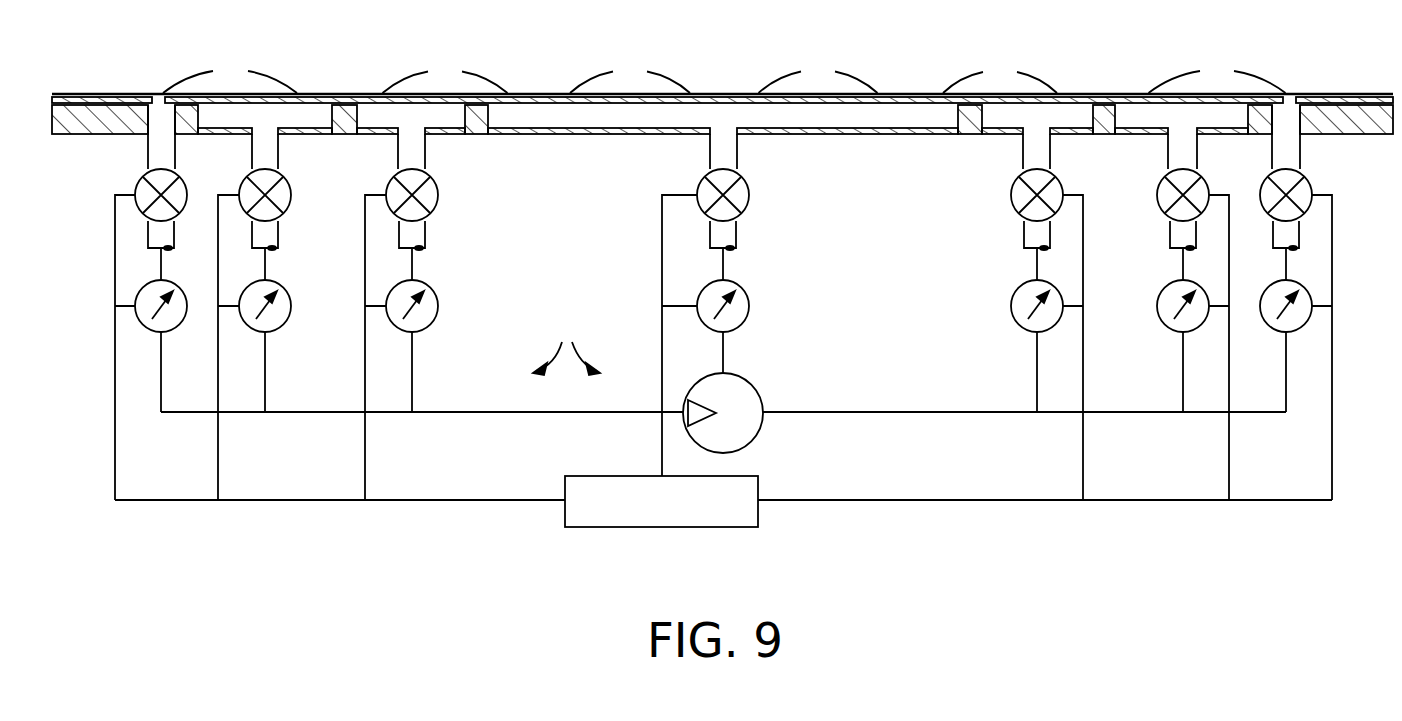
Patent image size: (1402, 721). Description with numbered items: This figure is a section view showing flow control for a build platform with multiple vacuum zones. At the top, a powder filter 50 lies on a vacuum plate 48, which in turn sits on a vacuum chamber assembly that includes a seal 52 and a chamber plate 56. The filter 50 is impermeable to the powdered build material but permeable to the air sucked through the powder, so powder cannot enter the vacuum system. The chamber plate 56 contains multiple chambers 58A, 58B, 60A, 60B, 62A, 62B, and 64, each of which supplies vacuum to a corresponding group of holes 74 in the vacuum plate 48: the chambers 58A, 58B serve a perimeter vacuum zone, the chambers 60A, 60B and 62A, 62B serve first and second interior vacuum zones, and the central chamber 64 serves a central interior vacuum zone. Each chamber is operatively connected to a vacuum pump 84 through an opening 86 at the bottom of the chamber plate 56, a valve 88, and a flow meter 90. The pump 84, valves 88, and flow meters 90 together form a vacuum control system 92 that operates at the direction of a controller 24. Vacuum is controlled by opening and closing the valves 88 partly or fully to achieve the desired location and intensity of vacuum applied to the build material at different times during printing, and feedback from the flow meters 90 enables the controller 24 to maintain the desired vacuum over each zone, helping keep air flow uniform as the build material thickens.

The controller 24 is at (615, 487).
The vacuum plate 48 is at (88, 100).
The powder filter 50 is at (92, 93).
The seal 52 is at (474, 115).
The chamber plate 56 is at (58, 120).
The chamber 58A is at (155, 120).
The chamber 58B is at (1288, 117).
The chamber 60A is at (308, 120).
The chamber 60B is at (1077, 117).
The chamber 62A is at (368, 117).
The chamber 62B is at (1132, 117).
The chamber 64 is at (720, 117).
The holes 74 is at (232, 92).
The vacuum pump 84 is at (742, 390).
The opening 86 is at (160, 135).
The valve 88 is at (187, 190).
The flow meter 90 is at (153, 322).
The vacuum control system 92 is at (566, 345).